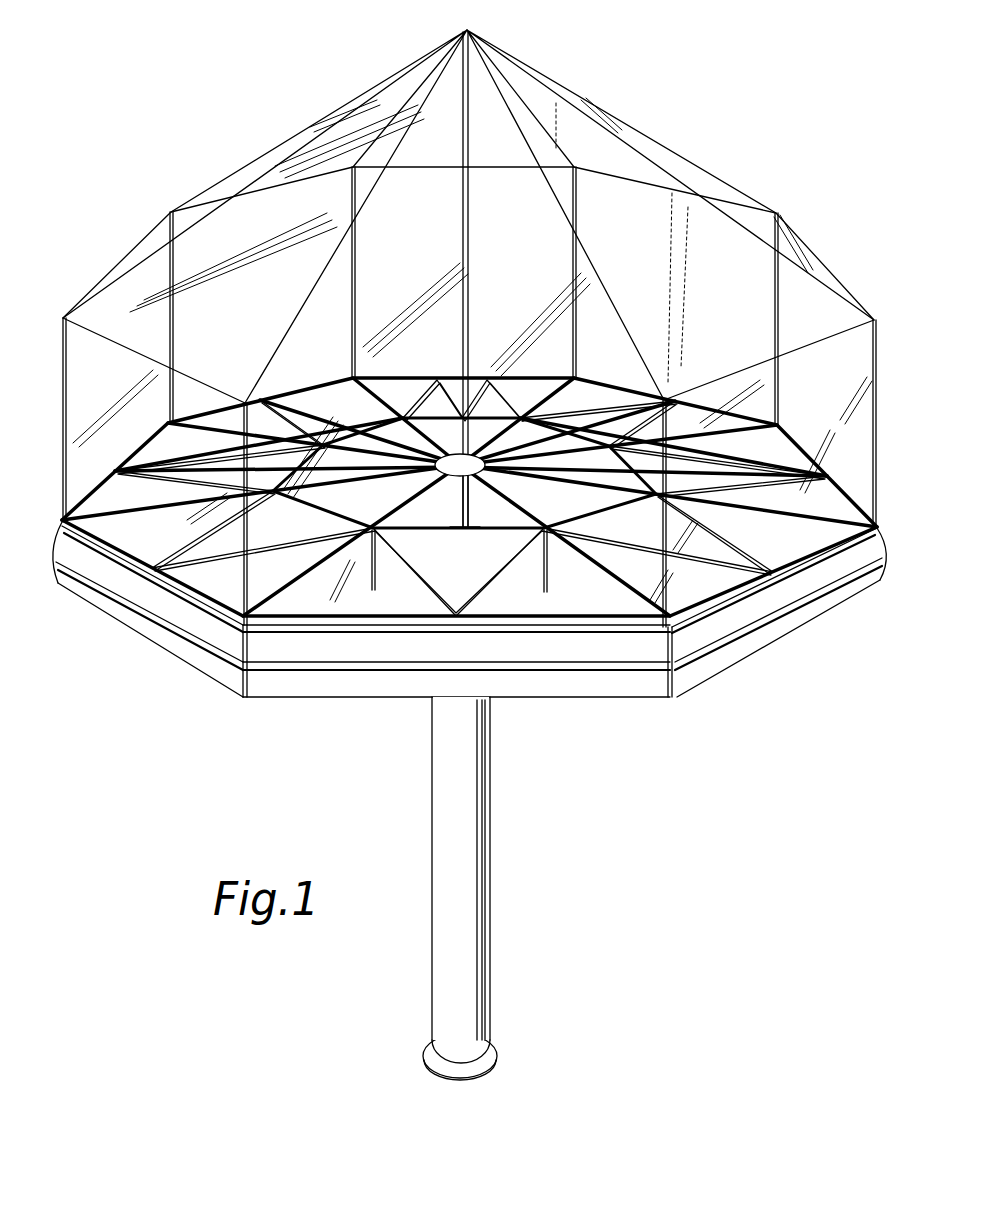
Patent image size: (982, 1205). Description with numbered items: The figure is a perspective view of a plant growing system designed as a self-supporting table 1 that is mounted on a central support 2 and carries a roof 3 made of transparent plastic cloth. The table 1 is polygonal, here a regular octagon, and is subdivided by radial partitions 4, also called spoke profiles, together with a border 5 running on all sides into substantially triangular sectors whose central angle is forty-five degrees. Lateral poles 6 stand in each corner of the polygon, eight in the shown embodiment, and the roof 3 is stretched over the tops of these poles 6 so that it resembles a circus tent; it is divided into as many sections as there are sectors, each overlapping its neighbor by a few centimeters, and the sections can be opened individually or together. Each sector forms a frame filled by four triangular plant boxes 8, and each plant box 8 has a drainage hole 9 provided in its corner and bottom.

The table 1 is at (279, 710).
The central support 2 is at (470, 857).
The roof 3 is at (671, 148).
The radial partitions 4 is at (790, 540).
The border 5 is at (648, 683).
The lateral poles 6 is at (571, 263).
The plant boxes 8 is at (702, 587).
The drainage hole 9 is at (545, 592).